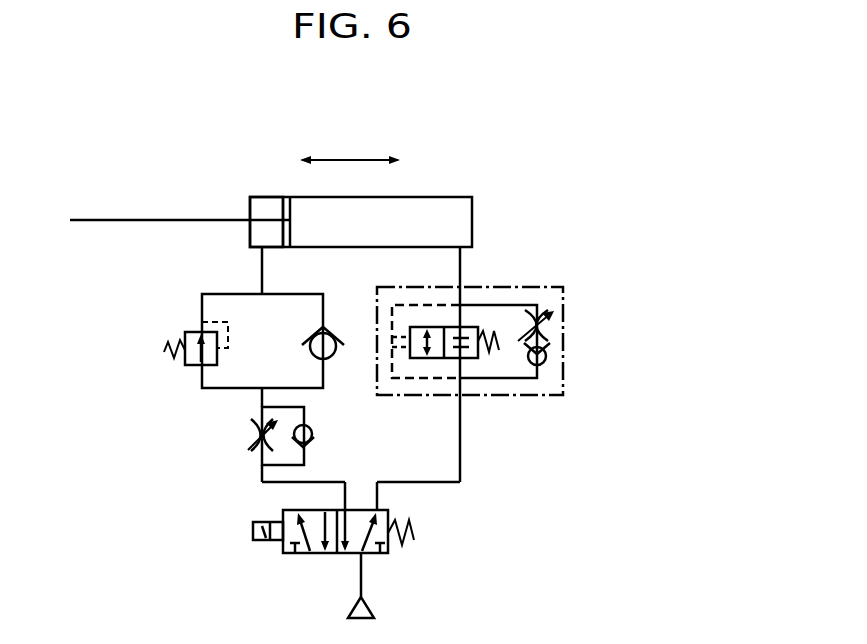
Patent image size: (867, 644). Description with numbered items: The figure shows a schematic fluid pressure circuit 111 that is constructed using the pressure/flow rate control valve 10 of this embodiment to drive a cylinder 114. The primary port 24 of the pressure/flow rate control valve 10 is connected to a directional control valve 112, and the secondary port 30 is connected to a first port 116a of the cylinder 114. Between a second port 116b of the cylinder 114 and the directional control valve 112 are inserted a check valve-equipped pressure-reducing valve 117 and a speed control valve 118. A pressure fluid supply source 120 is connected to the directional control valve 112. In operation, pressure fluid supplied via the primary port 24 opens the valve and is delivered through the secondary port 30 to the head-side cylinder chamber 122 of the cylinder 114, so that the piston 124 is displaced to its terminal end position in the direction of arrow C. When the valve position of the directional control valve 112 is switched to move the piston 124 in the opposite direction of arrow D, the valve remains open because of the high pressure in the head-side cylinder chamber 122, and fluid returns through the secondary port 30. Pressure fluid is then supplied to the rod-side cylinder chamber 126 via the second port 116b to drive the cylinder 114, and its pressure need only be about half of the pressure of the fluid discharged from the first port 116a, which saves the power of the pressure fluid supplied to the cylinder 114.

The fluid pressure circuit 111 is at (607, 127).
The cylinder 114 is at (437, 197).
The head-side cylinder chamber 122 is at (380, 238).
The piston 124 is at (290, 218).
The rod-side cylinder chamber 126 is at (262, 208).
The first port 116a is at (462, 249).
The second port 116b is at (260, 249).
The secondary port 30 is at (460, 285).
The primary port 24 is at (462, 396).
The pressure/flow rate control valve 10 is at (563, 306).
The check valve-equipped pressure-reducing valve 117 is at (168, 371).
The speed control valve 118 is at (238, 449).
The directional control valve 112 is at (396, 514).
The pressure fluid supply source 120 is at (373, 612).